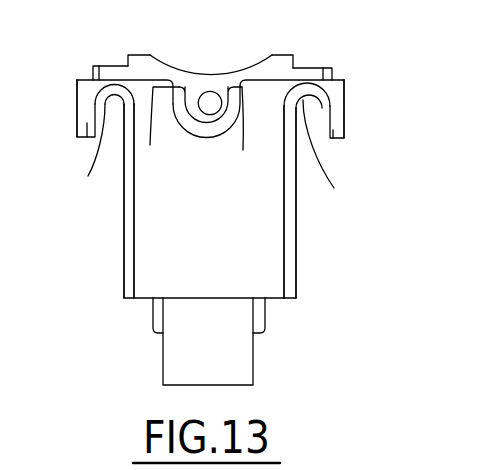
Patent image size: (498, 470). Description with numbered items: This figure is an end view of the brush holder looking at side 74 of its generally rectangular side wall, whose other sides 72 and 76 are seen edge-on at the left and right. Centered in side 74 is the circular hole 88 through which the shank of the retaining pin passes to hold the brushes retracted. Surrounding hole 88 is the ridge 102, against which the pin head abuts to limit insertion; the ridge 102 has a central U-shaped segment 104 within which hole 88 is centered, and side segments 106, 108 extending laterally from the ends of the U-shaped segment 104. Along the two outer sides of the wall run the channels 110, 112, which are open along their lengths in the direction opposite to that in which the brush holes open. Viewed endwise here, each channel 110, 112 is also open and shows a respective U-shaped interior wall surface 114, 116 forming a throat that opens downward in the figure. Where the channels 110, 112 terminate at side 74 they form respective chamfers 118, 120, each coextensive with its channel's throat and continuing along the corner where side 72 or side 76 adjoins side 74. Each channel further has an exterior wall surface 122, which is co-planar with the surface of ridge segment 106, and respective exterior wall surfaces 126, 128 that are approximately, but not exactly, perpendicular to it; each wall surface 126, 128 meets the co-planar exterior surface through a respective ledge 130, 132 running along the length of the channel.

The side 72 is at (124, 211).
The side 74 is at (155, 279).
The side 76 is at (296, 252).
The circular hole 88 is at (211, 91).
The ridge 102 is at (154, 135).
The central U-shaped segment 104 is at (210, 138).
The side segment 106 is at (115, 65).
The side segment 108 is at (308, 66).
The channel 110 is at (96, 146).
The channel 112 is at (331, 152).
The U-shaped interior wall surface 114 is at (73, 150).
The U-shaped interior wall surface 116 is at (338, 154).
The chamfer 118 is at (95, 123).
The chamfer 120 is at (330, 130).
The exterior wall surface 122 is at (98, 66).
The exterior wall surface 126 is at (77, 93).
The exterior wall surface 128 is at (345, 108).
The ledge 130 is at (93, 66).
The ledge 132 is at (343, 79).